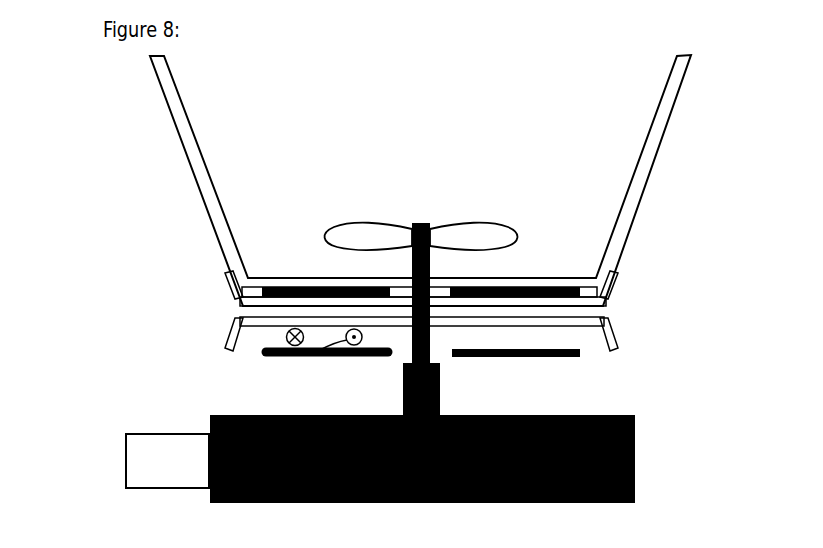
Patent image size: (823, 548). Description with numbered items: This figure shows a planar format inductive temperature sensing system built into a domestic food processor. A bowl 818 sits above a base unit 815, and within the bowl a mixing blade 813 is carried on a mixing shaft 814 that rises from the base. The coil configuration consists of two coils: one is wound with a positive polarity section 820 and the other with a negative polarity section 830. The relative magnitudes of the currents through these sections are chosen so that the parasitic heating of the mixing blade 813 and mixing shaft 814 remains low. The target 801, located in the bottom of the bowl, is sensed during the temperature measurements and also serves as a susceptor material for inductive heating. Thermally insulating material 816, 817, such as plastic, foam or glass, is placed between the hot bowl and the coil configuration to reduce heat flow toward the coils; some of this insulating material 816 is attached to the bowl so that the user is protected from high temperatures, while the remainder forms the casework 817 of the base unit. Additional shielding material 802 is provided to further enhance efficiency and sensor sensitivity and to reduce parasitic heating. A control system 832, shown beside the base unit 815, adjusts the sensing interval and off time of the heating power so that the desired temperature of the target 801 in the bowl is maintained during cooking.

The target 801 is at (580, 288).
The shielding material 802 is at (557, 357).
The mixing blade 813 is at (500, 238).
The mixing shaft 814 is at (422, 223).
The motor 815 is at (635, 448).
The thermally insulating material 816 is at (605, 297).
The casework 817 is at (610, 327).
The container 818 is at (677, 88).
The positive polarity section 820 is at (288, 333).
The negative polarity section 830 is at (302, 359).
The control system 832 is at (126, 460).